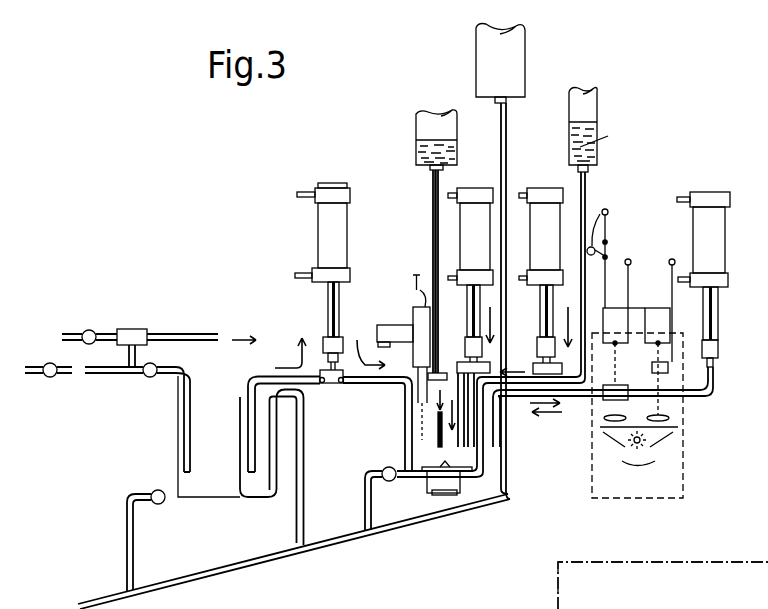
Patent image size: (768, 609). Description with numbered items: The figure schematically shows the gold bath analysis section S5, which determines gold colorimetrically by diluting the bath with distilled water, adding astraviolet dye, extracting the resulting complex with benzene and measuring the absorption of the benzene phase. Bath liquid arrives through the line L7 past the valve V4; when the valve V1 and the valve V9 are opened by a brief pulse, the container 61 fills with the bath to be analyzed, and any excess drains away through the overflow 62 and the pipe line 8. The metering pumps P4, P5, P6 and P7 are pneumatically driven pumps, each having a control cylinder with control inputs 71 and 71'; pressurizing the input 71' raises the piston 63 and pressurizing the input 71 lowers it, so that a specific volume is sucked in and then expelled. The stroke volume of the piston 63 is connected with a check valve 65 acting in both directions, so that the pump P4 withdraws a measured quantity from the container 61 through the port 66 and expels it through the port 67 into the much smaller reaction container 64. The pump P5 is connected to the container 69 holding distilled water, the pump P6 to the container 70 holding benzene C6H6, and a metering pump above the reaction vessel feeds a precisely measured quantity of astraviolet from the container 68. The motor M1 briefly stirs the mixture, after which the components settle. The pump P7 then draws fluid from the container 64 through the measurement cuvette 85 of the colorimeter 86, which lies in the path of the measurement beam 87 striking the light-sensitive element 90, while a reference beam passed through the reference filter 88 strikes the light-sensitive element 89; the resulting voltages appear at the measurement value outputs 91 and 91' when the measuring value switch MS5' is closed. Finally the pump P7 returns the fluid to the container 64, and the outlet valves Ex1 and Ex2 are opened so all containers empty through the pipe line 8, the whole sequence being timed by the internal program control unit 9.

The valve V1 is at (46, 378).
The valve V4 is at (88, 330).
The valve V9 is at (147, 378).
The line L7 is at (62, 334).
The container 61 is at (178, 463).
The outlet valve Ex1 is at (158, 504).
The pipe line 8 is at (196, 575).
The overflow 62 is at (281, 394).
The piston 63 is at (326, 316).
The check valve 65 is at (333, 388).
The valve port 66 is at (322, 385).
The valve port 67 is at (344, 366).
The reaction container 64 is at (408, 402).
The container 68 is at (416, 127).
The container 69 is at (476, 63).
The container 70 is at (569, 127).
The benzene C6H6 is at (621, 139).
The outlet valve Ex2 is at (389, 481).
The motor M1 is at (457, 488).
The metering pump P4 is at (331, 232).
The metering pump P5 is at (471, 317).
The metering pump P6 is at (545, 281).
The metering pump P7 is at (611, 319).
The control input 71 is at (297, 176).
The control input 71' is at (287, 282).
The measuring value switch MS5' is at (613, 244).
The measurement value output 91 is at (634, 266).
The measurement value output 91' is at (673, 297).
The light-sensitive element 90 is at (614, 342).
The light-sensitive element 89 is at (658, 336).
The reference filter 88 is at (668, 368).
The measurement cuvette 85 is at (603, 397).
The measurement beam 87 is at (597, 415).
The colorimeter 86 is at (683, 449).
The internal program control unit 9 is at (712, 562).
The gold bath analysis section S5 is at (663, 585).